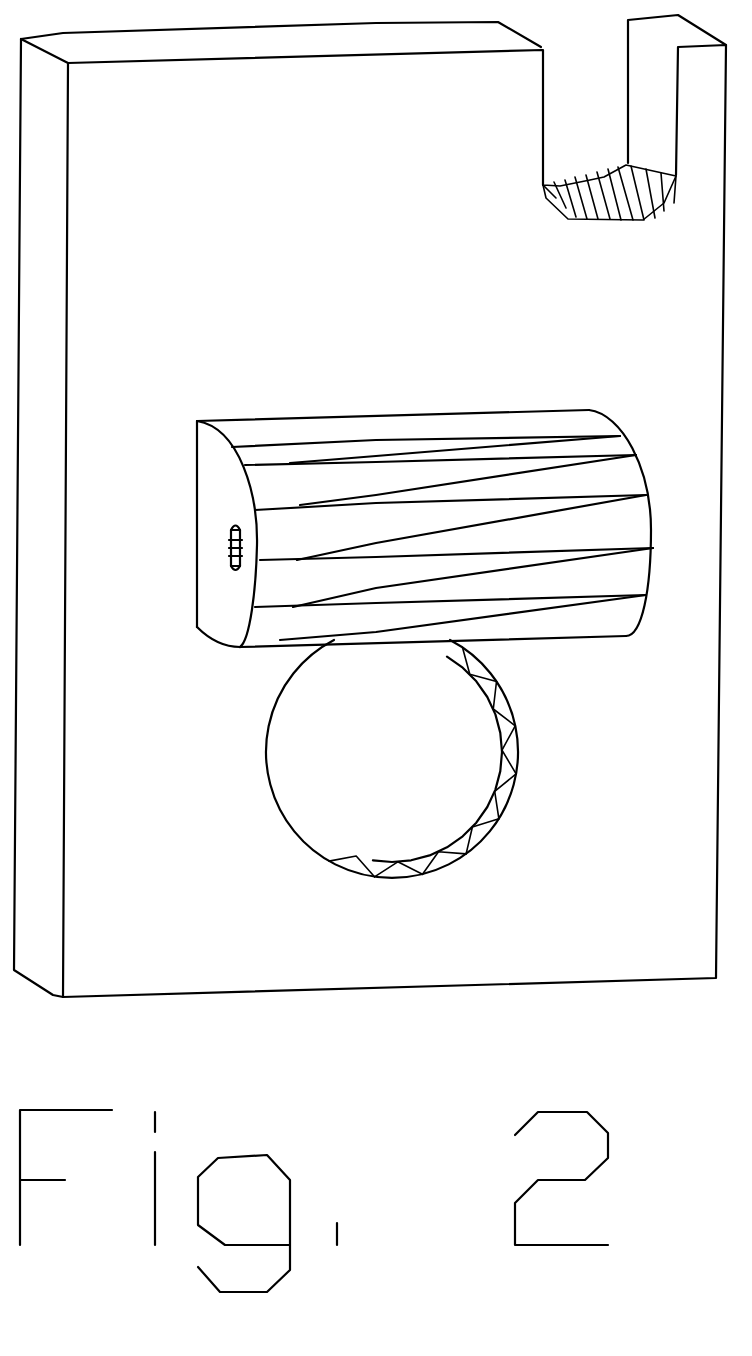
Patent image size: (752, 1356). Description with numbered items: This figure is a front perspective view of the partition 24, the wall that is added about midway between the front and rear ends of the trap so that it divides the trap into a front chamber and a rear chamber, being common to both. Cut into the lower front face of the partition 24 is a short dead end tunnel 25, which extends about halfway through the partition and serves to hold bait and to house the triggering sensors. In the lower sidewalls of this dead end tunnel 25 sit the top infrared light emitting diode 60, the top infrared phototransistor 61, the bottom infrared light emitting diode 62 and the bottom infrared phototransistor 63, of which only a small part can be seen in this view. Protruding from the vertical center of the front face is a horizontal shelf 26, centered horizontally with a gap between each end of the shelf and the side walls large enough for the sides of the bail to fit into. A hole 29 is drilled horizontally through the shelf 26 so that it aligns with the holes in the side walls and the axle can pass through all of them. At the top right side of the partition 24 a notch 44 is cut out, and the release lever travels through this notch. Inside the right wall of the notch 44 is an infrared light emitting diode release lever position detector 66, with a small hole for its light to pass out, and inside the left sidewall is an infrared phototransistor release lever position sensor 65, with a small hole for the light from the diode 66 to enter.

The partition 24 is at (316, 374).
The short dead end tunnel 25 is at (392, 759).
The shelf 26 is at (379, 459).
The hole in the shelf for the axle 29 is at (155, 595).
The notch in the partition for the release lever 44 is at (558, 218).
The top infrared light emitting diode 60 is at (539, 782).
The top infrared phototransistor 61 is at (240, 792).
The bottom infrared light emitting diode 62 is at (549, 898).
The bottom infrared phototransistor 63 is at (260, 840).
The infrared phototransistor release lever position sensor 65 is at (429, 131).
The infrared light emitting diode release lever position detector 66 is at (633, 302).